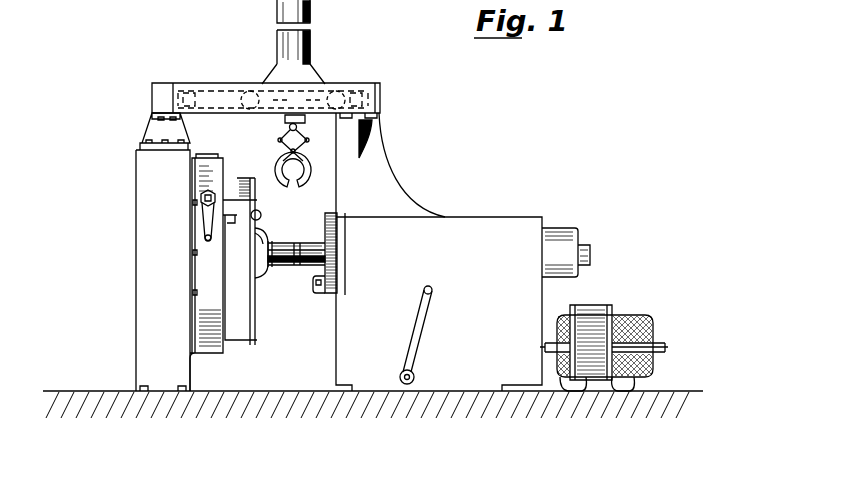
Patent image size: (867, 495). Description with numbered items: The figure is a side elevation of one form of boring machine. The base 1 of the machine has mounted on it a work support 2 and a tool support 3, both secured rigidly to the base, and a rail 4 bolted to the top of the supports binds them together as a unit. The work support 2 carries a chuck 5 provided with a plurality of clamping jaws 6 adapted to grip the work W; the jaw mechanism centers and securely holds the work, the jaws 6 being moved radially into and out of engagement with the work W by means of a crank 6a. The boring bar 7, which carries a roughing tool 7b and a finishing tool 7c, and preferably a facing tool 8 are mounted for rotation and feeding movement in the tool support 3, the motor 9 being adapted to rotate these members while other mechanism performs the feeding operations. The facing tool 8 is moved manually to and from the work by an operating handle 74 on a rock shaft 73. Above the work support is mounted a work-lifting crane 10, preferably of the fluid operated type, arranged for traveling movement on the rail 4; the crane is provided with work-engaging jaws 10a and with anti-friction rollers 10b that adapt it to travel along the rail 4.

The base 1 is at (143, 405).
The work support 2 is at (150, 338).
The tool support 3 is at (517, 227).
The rail 4 is at (213, 96).
The chuck 5 is at (210, 270).
The clamping jaws 6 is at (243, 333).
The crank 6a is at (200, 210).
The boring bar 7 is at (326, 213).
The roughing tool 7b is at (273, 241).
The finishing tool 7c is at (298, 241).
The facing tool 8 is at (323, 293).
The motor 9 is at (605, 313).
The work-lifting crane 10 is at (313, 48).
The work-engaging jaws 10a is at (313, 172).
The anti-friction rollers 10b is at (250, 90).
The rock shaft 73 is at (416, 377).
The operating handle 74 is at (422, 322).
The work W is at (252, 290).